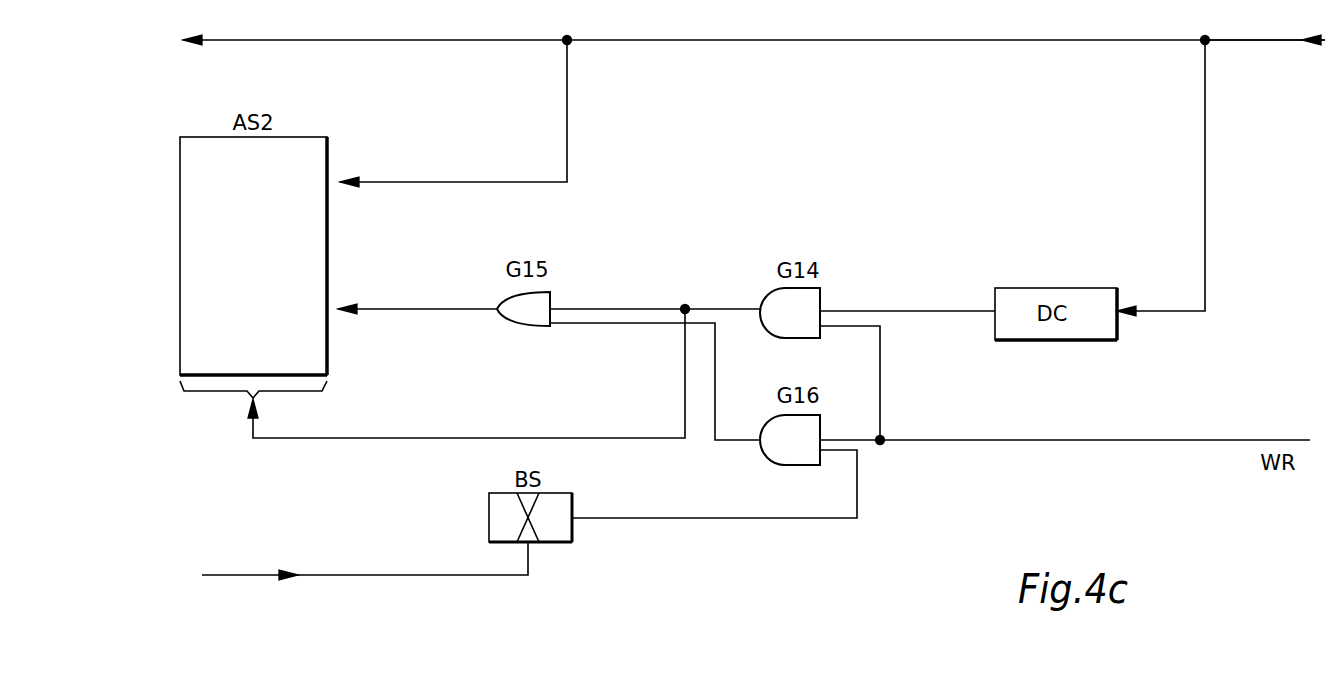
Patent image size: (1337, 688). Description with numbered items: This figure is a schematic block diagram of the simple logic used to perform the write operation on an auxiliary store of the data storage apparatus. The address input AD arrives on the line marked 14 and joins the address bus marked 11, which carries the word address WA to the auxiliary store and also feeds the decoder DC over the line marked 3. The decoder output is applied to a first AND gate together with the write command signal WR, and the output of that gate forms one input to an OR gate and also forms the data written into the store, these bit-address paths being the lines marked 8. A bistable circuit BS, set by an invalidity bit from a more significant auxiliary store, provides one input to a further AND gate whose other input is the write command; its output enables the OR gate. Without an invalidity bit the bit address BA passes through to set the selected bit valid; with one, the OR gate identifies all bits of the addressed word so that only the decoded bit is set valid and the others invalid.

The address bus 11 is at (229, 48).
The address line AD 14 is at (1273, 33).
The 3-bit select line 3 is at (1198, 113).
The 8-bit data line 8 is at (395, 302).